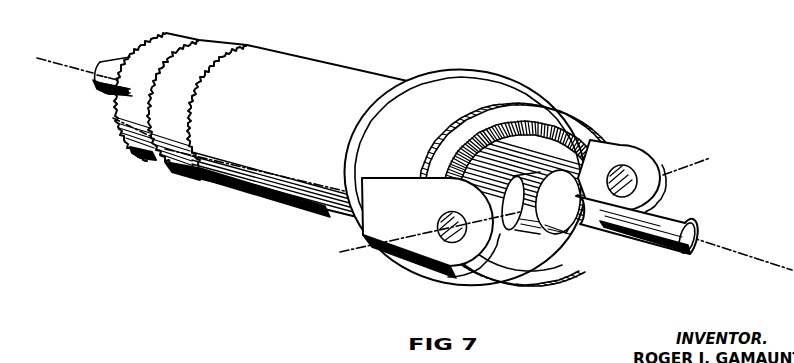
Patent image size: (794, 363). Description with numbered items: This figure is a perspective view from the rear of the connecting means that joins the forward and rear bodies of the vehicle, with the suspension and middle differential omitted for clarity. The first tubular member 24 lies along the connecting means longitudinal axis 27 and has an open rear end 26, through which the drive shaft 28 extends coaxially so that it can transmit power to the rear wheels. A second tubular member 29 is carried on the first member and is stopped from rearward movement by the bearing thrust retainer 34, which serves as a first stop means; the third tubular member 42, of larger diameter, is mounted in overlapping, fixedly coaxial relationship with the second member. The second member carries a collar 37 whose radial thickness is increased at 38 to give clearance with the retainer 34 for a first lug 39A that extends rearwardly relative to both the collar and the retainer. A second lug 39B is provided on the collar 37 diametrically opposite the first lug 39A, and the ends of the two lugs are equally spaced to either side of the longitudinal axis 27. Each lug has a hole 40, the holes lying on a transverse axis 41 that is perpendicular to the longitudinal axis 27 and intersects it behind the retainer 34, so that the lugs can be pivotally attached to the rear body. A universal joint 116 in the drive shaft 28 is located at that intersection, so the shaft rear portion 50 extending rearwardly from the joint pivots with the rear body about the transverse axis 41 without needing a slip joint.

The connecting means longitudinal axis 27 is at (37, 58).
The drive shaft 28 is at (105, 57).
The first tubular member 24 is at (187, 40).
The second tubular member 29 is at (247, 45).
The third tubular member 42 is at (278, 45).
The collar 37 is at (447, 119).
The increased radial thickness 38 is at (416, 179).
The bearing thrust retainer 34 is at (530, 103).
The open rear end 26 is at (569, 113).
The universal joint 116 is at (598, 186).
The transverse axis 41 is at (708, 159).
The second lug 39B is at (668, 188).
The first lug 39A is at (490, 258).
The holes 40 is at (440, 233).
The shaft rear portion 50 is at (668, 254).